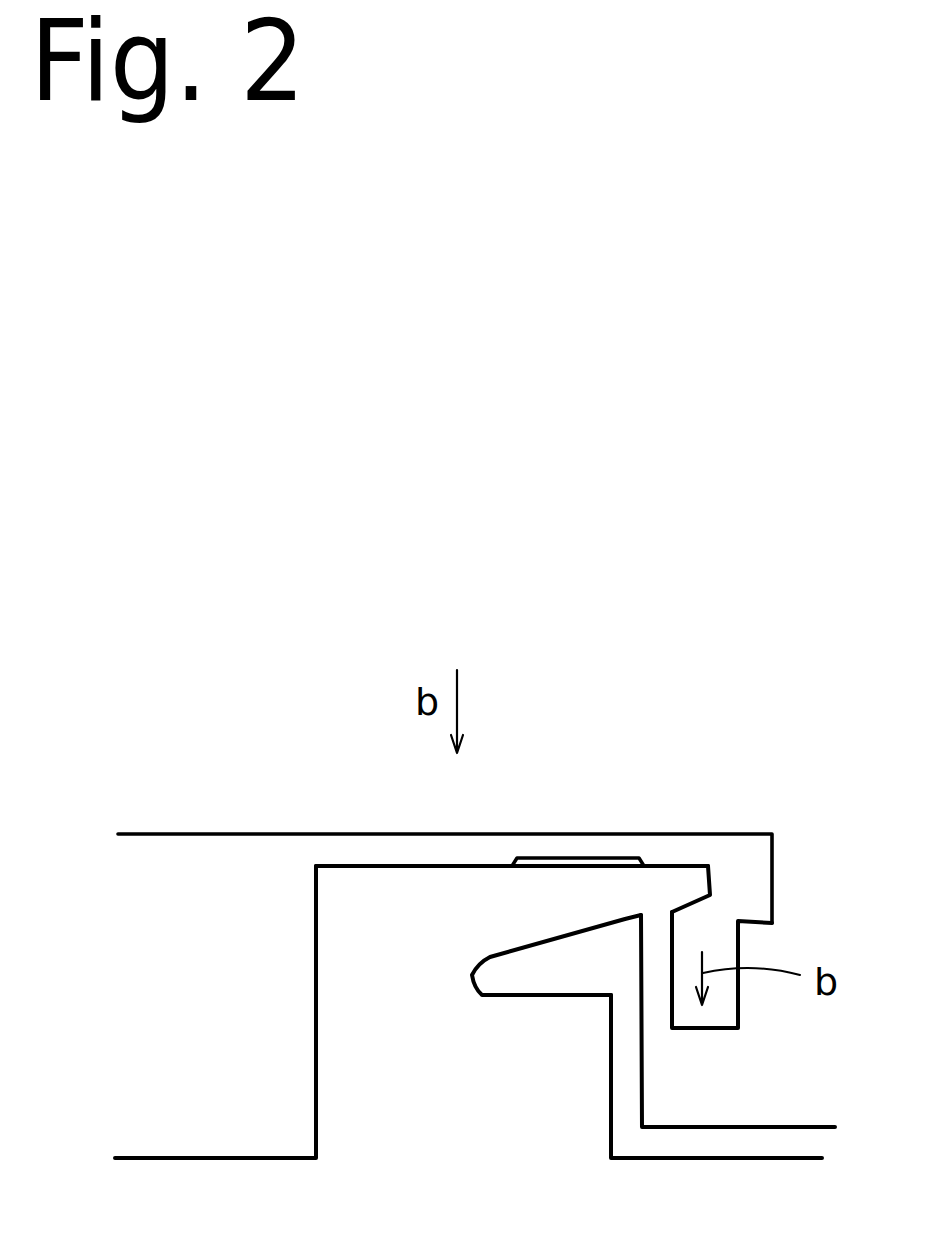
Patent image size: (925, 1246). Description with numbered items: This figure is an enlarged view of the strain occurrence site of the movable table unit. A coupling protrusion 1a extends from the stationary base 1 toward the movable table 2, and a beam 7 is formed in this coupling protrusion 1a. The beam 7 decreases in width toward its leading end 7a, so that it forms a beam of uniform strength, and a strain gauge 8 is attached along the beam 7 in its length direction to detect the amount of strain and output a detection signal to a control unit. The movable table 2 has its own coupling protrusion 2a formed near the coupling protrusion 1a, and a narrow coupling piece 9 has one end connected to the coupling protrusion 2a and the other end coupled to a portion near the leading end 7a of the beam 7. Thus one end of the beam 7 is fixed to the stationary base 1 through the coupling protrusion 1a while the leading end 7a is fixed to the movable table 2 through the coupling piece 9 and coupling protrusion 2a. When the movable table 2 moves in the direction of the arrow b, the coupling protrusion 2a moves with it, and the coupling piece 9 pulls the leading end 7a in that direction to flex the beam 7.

The stationary base 1 is at (148, 1178).
The coupling protrusion 1a is at (430, 1070).
The movable table 2 is at (166, 810).
The coupling protrusion 2a is at (755, 1083).
The beam 7 is at (525, 918).
The leading end 7a is at (698, 883).
The strain gauge 8 is at (578, 865).
The coupling piece 9 is at (658, 997).